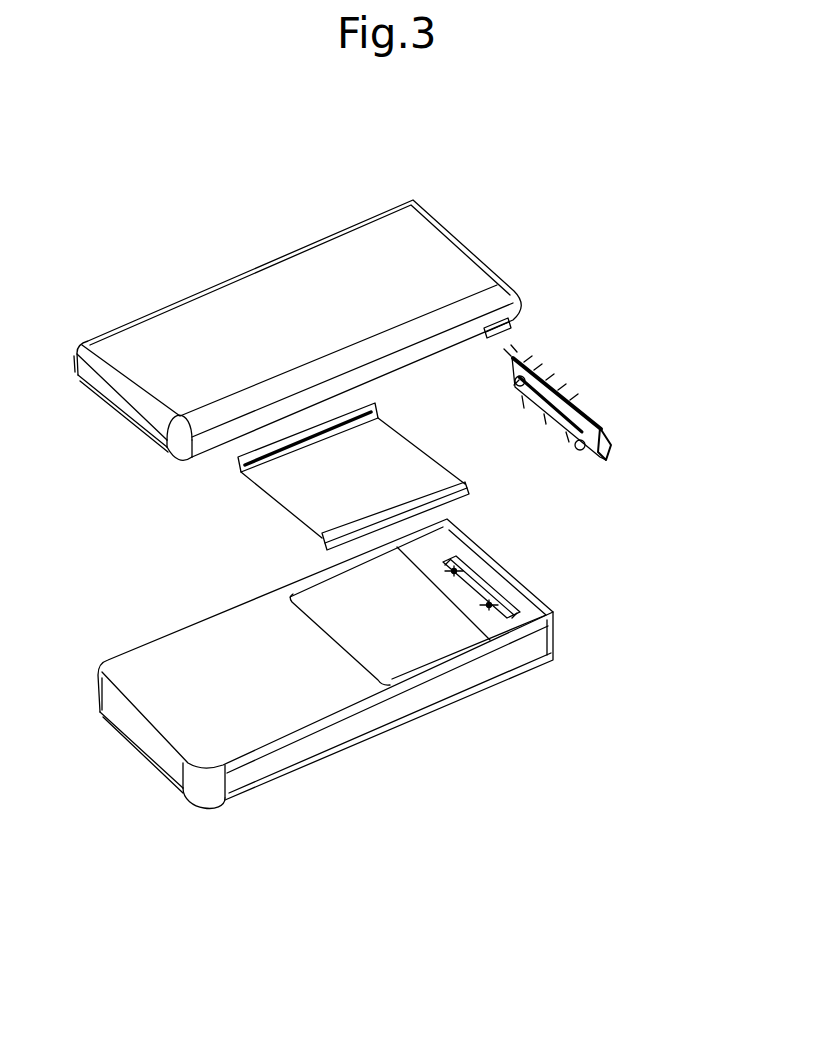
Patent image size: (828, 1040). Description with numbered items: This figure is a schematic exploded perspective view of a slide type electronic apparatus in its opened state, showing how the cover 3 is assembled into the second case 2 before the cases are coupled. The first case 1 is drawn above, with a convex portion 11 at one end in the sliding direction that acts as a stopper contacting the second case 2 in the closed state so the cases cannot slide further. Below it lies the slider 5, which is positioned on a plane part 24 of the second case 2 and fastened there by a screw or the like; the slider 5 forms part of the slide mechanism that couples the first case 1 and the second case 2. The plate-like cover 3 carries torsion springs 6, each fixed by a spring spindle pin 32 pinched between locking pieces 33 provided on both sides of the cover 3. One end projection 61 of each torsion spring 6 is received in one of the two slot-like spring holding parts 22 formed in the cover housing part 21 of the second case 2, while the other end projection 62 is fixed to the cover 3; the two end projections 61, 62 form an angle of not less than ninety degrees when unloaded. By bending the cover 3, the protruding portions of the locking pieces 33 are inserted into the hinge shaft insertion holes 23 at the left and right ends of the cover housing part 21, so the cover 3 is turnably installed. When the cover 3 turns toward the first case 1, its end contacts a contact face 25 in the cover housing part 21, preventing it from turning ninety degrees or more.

The first case 1 is at (301, 330).
The convex portion 11 is at (470, 296).
The second case 2 is at (355, 690).
The cover housing part 21 is at (530, 667).
The spring holding parts 22 is at (450, 576).
The hinge shaft insertion hole 23 is at (457, 561).
The plane part 24 is at (390, 668).
The contact face 25 is at (495, 584).
The cover 3 is at (558, 412).
The spring spindle pin 32 is at (516, 394).
The locking pieces 33 is at (514, 381).
The slider 5 is at (290, 502).
The torsion spring 6 is at (582, 383).
The end projection 61 is at (522, 410).
The end projection 62 is at (540, 368).